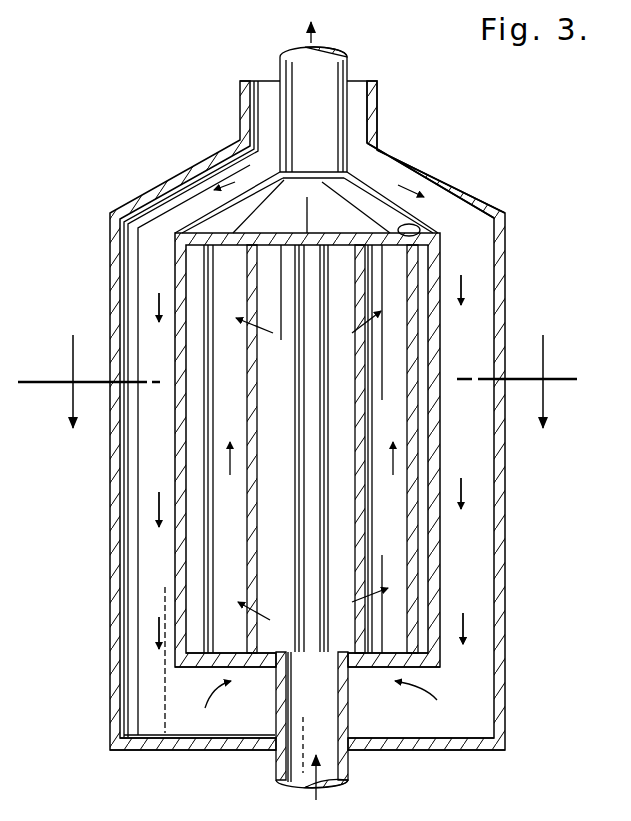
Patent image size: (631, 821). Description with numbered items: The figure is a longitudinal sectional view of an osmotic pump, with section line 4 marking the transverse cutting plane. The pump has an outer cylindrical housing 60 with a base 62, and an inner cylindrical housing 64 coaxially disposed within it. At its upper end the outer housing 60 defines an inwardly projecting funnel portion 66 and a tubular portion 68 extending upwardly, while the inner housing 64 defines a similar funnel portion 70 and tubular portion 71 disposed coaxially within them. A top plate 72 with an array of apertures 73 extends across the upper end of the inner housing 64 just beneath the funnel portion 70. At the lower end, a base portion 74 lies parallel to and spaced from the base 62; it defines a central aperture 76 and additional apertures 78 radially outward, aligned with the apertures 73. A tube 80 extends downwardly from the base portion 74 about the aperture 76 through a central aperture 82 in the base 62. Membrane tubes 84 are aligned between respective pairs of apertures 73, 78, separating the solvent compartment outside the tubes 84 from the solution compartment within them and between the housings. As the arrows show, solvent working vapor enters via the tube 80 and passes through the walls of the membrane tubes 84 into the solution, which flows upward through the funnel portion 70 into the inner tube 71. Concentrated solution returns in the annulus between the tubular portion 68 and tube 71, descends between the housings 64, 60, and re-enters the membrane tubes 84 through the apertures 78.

The section line 4- 4 is at (297, 365).
The outer cylindrical housing 60 is at (505, 570).
The base 62 is at (418, 750).
The inner cylindrical housing 64 is at (440, 443).
The funnel portion 66 is at (438, 172).
The tubular portion 68 is at (373, 105).
The funnel portion 70 is at (215, 207).
The tubular portion 71 is at (287, 68).
The top plate 72 is at (341, 247).
The apertures 73 is at (417, 221).
The base portion 74 is at (262, 668).
The central aperture 76 is at (338, 660).
The additional apertures 78 is at (250, 657).
The tube 80 is at (343, 717).
The central aperture 82 is at (275, 748).
The membrane tubes 84 is at (197, 562).